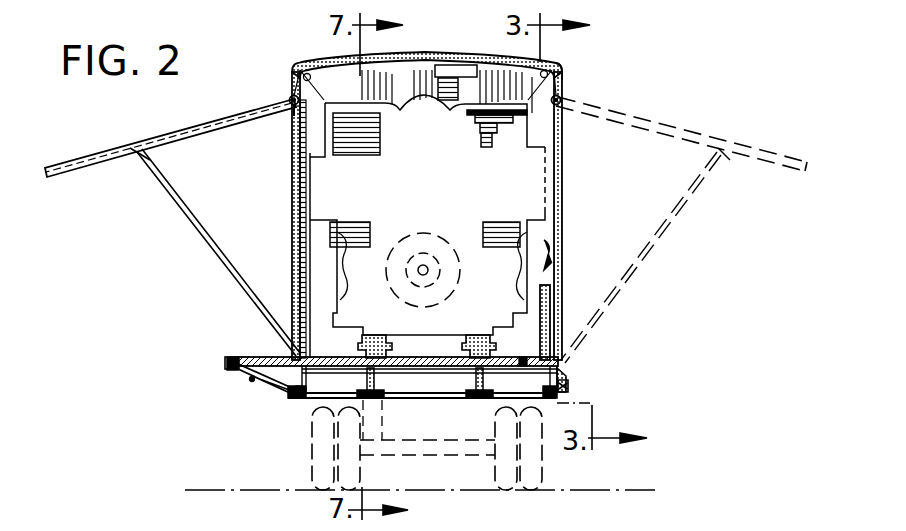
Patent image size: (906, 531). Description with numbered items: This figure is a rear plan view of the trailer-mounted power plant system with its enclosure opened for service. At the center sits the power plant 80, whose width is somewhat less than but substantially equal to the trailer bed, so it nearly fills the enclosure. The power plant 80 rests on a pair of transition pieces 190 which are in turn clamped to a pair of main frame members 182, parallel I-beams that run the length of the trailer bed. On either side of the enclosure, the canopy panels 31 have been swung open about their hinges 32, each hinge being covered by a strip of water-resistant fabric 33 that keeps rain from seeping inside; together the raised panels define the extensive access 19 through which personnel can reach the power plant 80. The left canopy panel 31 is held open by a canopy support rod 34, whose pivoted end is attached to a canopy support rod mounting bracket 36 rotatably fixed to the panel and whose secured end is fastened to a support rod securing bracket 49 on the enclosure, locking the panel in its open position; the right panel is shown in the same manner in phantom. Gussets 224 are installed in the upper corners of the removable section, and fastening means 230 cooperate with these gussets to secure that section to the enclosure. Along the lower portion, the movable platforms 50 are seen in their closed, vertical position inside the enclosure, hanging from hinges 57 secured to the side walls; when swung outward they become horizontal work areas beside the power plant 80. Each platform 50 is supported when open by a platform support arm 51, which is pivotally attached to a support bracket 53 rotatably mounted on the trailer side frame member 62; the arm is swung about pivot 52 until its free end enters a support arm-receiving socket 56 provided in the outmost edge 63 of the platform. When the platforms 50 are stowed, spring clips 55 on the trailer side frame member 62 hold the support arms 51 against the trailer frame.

The access 19 is at (291, 110).
The canopy panel 31 is at (165, 133).
The hinge 32 is at (322, 84).
The strip of water-resistant fabric 33 is at (291, 96).
The canopy support rod 34 is at (212, 250).
The canopy support rod mounting bracket 36 is at (130, 162).
The support rod securing bracket 49 is at (299, 322).
The movable platform 50 is at (260, 356).
The platform support arm 51 is at (250, 386).
The pivot 52 is at (262, 392).
The support bracket 53 is at (290, 400).
The spring clip 55 is at (580, 380).
The support arm-receiving socket 56 is at (232, 374).
The hinge 57 is at (316, 356).
The trailer side frame member 62 is at (523, 357).
The outmost edge 63 is at (226, 365).
The power plant 80 is at (440, 188).
The main frame member 182 is at (410, 390).
The transition piece 190 is at (464, 334).
The gusset 224 is at (323, 72).
The fastening means 230 is at (564, 70).